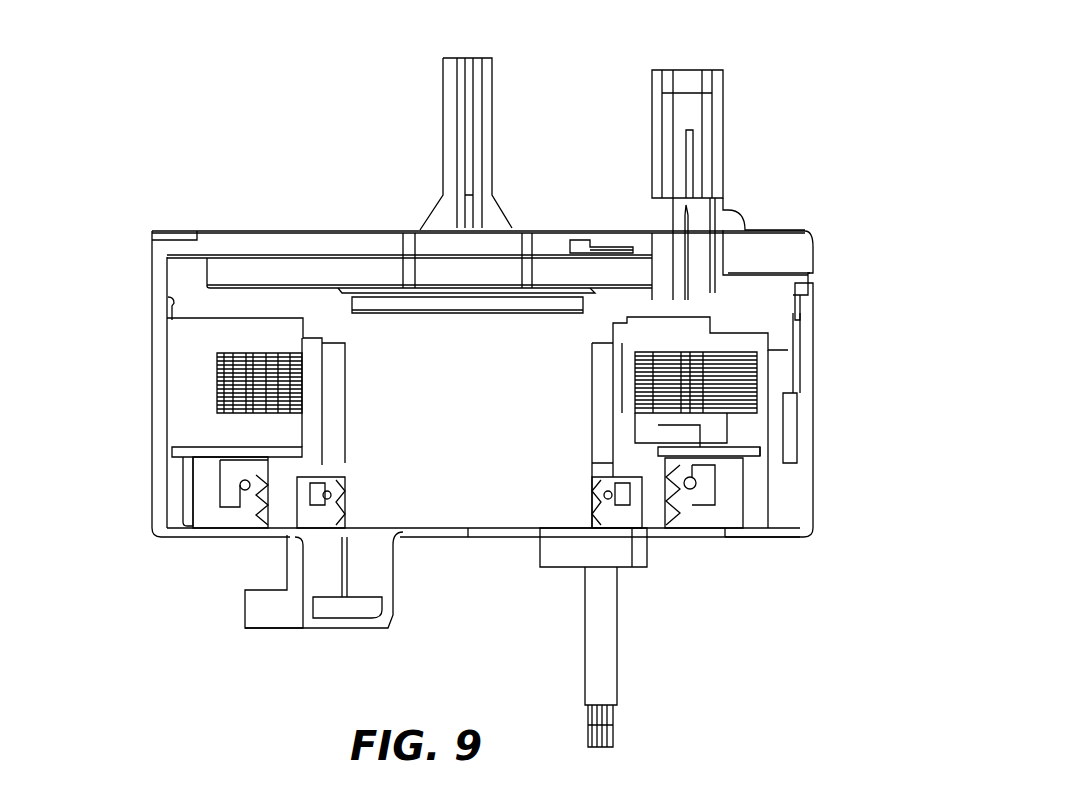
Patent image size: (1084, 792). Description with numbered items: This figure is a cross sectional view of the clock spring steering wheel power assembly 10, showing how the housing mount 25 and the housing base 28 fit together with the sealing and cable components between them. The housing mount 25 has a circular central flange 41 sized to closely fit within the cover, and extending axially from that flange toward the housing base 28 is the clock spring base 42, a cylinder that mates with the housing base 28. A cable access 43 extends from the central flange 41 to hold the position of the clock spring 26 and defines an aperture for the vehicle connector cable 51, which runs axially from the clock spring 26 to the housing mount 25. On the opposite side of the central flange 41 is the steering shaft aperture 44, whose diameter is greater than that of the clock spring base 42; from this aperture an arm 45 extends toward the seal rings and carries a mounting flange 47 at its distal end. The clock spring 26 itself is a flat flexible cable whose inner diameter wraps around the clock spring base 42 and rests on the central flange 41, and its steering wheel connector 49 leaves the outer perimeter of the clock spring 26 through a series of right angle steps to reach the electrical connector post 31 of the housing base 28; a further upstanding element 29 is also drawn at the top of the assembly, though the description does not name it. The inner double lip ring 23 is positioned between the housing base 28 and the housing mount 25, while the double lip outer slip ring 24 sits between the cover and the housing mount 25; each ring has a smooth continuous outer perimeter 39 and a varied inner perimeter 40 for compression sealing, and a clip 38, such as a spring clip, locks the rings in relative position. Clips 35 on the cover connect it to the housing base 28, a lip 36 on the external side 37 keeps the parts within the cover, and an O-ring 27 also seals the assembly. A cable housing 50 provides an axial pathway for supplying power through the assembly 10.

The clock spring steering wheel power assembly 10 is at (840, 216).
The inner double lip ring 23 is at (632, 517).
The double lip outer slip ring 24 is at (733, 502).
The housing mount 25 is at (245, 618).
The clock spring 26 is at (745, 380).
The O-ring 27 is at (810, 298).
The housing base 28 is at (745, 232).
The terminal 29 is at (497, 56).
The electrical connector post 31 is at (718, 90).
The clips 35 is at (607, 245).
The lip 36 is at (737, 538).
The opposing external side 37 is at (202, 533).
The clip 38 is at (240, 487).
The outer perimeter 39 is at (192, 482).
The inner perimeter 40 is at (247, 480).
The circular central flange 41 is at (761, 452).
The clock spring base 42 is at (303, 345).
The cable access 43 is at (653, 430).
The steering shaft aperture 44 is at (392, 578).
The arm 45 is at (362, 630).
The mounting flange 47 is at (263, 630).
The steering wheel connector 49 is at (800, 382).
The cable housing 50 is at (565, 570).
The vehicle connector cable 51 is at (615, 720).